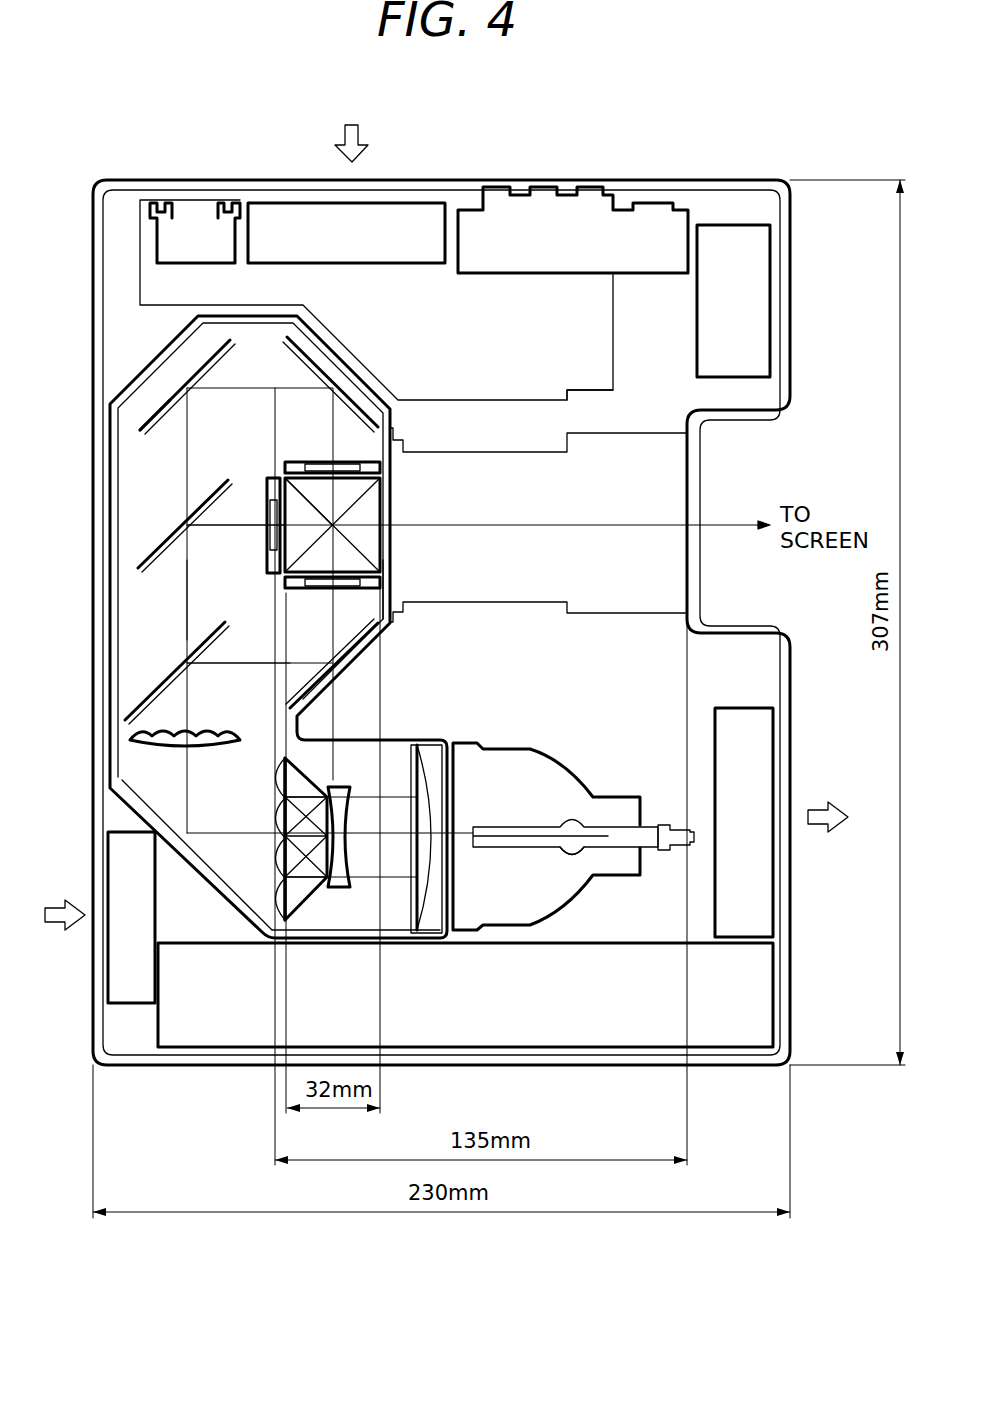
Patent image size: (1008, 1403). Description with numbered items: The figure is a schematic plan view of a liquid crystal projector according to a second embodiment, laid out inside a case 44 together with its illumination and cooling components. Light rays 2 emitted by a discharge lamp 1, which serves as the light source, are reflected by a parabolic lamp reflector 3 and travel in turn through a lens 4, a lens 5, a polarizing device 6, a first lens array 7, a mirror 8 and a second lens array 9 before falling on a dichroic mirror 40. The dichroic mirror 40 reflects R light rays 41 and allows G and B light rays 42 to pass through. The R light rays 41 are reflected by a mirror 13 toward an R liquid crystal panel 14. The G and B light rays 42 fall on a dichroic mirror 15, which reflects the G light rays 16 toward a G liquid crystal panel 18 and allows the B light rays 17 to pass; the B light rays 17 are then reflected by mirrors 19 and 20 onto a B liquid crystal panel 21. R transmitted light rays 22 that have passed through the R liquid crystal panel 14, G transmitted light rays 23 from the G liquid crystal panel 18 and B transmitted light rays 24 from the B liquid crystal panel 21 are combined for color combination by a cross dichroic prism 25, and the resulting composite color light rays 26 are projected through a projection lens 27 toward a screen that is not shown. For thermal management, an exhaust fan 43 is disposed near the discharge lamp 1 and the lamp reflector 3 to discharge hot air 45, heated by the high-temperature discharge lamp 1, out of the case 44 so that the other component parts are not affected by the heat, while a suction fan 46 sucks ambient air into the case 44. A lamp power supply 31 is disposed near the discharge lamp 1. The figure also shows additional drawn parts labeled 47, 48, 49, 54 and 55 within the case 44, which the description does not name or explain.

The discharge lamp 1 is at (580, 852).
The light rays 2 is at (505, 827).
The parabolic lamp reflector 3 is at (570, 900).
The lens 4 is at (428, 925).
The lens 5 is at (340, 885).
The polarizing device 6 is at (312, 870).
The first lens array 7 is at (283, 930).
The mirror 8 is at (135, 789).
The second lens array 9 is at (240, 742).
The mirror 13 is at (328, 698).
The R liquid crystal panel 14 is at (400, 590).
The dichroic mirror 15 is at (180, 524).
The G light rays 16 is at (217, 527).
The B light rays 17 is at (186, 443).
The G liquid crystal panel 18 is at (272, 575).
The mirror 19 is at (197, 364).
The mirror 20 is at (370, 392).
The B liquid crystal panel 21 is at (398, 452).
The R transmitted light rays 22 is at (375, 565).
The G transmitted light rays 23 is at (300, 466).
The B transmitted light rays 24 is at (337, 490).
The cross dichroic prism 25 is at (352, 547).
The composite color light rays 26 is at (618, 530).
The projection lens 27 is at (600, 613).
The lamp power supply 31 is at (760, 1025).
The dichroic mirror 40 is at (165, 668).
The R light rays 41 is at (243, 665).
The G and B light rays 42 is at (185, 592).
The exhaust fan 43 is at (765, 925).
The case 44 is at (790, 978).
The hot air 45 is at (818, 830).
The suction fan 46 is at (115, 868).
The circuit board 47 is at (418, 248).
The connector 48 is at (190, 203).
The circuit board 49 is at (515, 262).
The speaker 54 is at (712, 320).
The partition wall step 55 is at (588, 385).